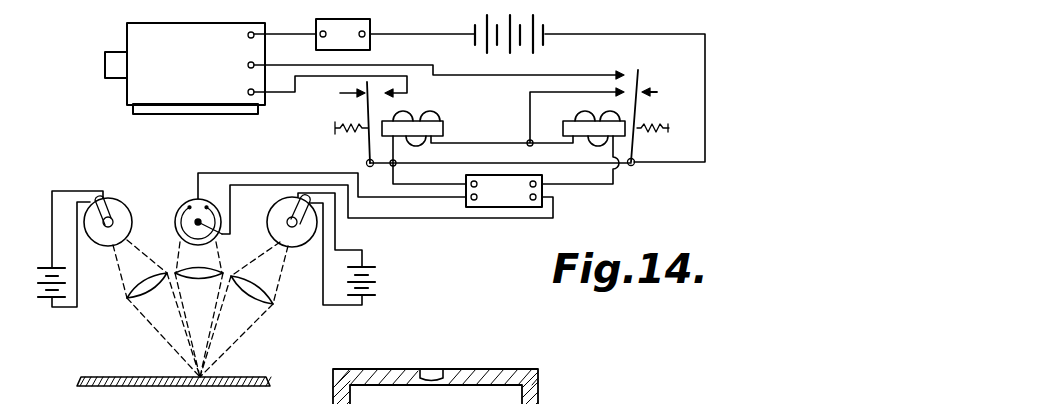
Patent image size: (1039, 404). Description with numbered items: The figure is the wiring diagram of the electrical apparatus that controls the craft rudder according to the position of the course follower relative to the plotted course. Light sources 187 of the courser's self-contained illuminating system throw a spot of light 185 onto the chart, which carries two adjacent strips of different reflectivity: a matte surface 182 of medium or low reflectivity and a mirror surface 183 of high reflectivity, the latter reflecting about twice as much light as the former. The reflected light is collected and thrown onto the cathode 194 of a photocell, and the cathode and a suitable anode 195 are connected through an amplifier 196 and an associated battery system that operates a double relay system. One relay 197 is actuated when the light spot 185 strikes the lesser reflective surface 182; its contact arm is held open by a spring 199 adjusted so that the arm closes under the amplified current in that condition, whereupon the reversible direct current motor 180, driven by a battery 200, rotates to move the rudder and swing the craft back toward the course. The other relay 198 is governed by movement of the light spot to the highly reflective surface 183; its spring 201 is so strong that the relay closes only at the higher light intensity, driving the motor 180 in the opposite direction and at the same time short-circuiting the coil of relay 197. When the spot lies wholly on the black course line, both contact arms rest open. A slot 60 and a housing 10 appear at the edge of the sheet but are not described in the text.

The reversible direct current electric motor 180 is at (185, 68).
The battery 200 is at (524, 50).
The relay 197 is at (433, 120).
The relay 198 is at (565, 125).
The spring 199 is at (352, 130).
The spring 201 is at (641, 126).
The amplifier 196 is at (504, 191).
The cathode 194 is at (177, 216).
The anode 195 is at (205, 232).
The light source lamp 187 is at (133, 191).
The spot of light 185 is at (204, 376).
The surface 182 is at (137, 377).
The mirror surface 183 is at (237, 378).
The slot 60 is at (433, 372).
The housing 10 is at (450, 386).